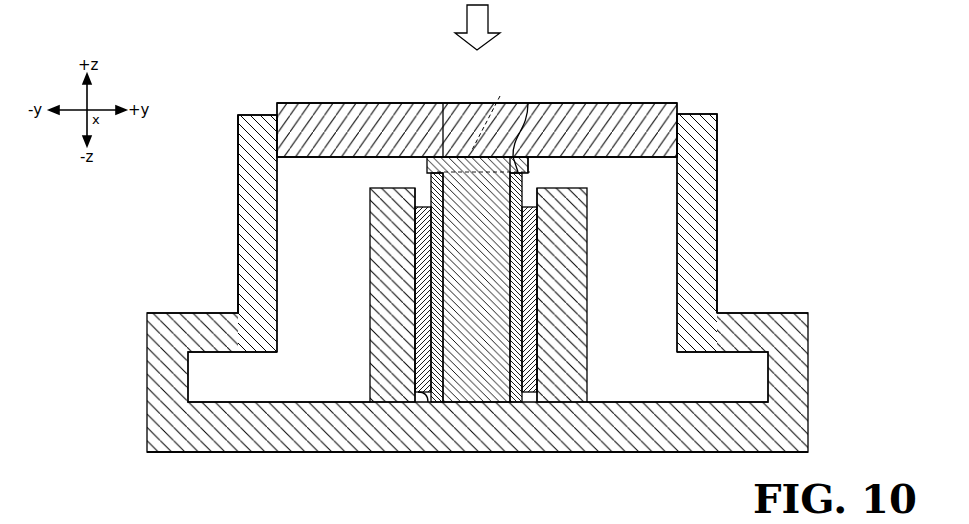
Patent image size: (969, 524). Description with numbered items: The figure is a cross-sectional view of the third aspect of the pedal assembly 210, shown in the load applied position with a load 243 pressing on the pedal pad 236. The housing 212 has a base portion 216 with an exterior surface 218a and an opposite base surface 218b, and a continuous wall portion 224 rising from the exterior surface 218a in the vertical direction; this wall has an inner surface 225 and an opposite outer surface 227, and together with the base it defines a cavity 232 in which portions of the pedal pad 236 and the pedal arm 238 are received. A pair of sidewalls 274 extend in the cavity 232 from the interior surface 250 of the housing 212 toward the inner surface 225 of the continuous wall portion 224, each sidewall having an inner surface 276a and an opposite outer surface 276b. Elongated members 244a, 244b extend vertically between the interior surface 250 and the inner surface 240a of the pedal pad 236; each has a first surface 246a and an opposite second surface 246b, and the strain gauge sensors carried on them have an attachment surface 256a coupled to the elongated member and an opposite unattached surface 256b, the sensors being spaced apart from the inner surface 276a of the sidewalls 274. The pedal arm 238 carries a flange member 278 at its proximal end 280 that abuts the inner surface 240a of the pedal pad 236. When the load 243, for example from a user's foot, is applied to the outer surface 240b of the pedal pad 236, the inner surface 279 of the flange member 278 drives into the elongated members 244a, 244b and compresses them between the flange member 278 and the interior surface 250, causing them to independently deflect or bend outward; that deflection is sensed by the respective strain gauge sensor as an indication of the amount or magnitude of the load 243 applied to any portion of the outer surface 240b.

The pedal assembly 210 is at (785, 100).
The housing 212 is at (98, 316).
The base portion 216 is at (110, 428).
The exterior surface 218a is at (210, 313).
The base surface 218b is at (565, 452).
The continuous wall portion 224 is at (258, 115).
The inner surface 225 is at (277, 213).
The outer surface 227 is at (238, 142).
The cavity 232 is at (275, 268).
The pedal pad 236 is at (690, 103).
The pedal arm 238 is at (485, 197).
The inner surface of pedal pad 240a is at (296, 168).
The outer surface of pedal pad 240b is at (397, 103).
The load 243 is at (490, 25).
The first elongated member 244a is at (443, 103).
The second elongated member 244b is at (528, 162).
The first surface of elongated member 246a is at (453, 378).
The second surface of elongated member 246b is at (432, 176).
The interior surface 250 is at (422, 395).
The attachment surface 256a is at (423, 380).
The unattached surface 256b is at (420, 363).
The sidewall 274 is at (325, 375).
The inner surface of sidewall 276a is at (420, 197).
The outer surface of sidewall 276b is at (370, 322).
The flange member 278 is at (528, 103).
The inner surface of flange member 279 is at (530, 170).
The proximal end 280 is at (493, 114).